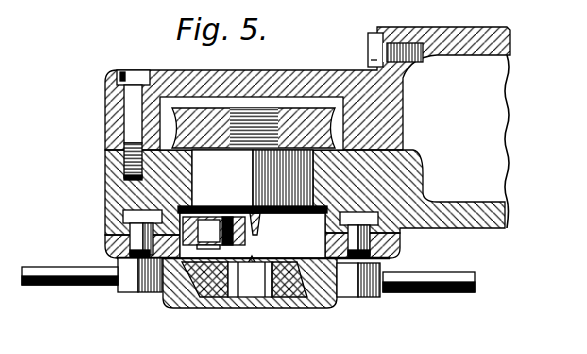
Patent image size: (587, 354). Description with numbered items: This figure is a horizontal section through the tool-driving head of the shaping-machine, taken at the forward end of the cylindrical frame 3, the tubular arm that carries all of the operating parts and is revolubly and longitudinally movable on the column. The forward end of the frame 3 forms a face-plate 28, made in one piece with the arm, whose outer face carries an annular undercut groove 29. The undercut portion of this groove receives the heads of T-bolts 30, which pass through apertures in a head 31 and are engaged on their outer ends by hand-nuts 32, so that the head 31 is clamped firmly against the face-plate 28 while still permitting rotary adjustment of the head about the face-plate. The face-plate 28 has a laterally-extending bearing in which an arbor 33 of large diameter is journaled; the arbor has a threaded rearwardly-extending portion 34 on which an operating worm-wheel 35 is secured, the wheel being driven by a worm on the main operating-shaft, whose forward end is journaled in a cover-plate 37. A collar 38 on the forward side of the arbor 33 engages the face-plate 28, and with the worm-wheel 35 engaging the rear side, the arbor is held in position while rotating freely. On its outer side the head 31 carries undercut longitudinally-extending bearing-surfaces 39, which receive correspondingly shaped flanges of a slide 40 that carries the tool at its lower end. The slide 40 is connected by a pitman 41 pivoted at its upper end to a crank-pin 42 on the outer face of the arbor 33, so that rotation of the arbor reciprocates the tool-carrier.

The cylindrical frame 3 is at (485, 141).
The face-plate 28 is at (133, 137).
The annular undercut groove 29 is at (123, 216).
The T-bolts 30 is at (400, 243).
The head 31 is at (103, 247).
The hand-nuts 32 is at (138, 290).
The arbor 33 is at (252, 178).
The threaded rearwardly-extending portion 34 is at (254, 130).
The worm-wheel 35 is at (253, 128).
The cover-plate 37 is at (383, 68).
The collar 38 is at (252, 232).
The undercut bearing-surfaces 39 is at (295, 307).
The slide 40 is at (323, 308).
The pitman 41 is at (254, 226).
The crank-pin 42 is at (214, 233).